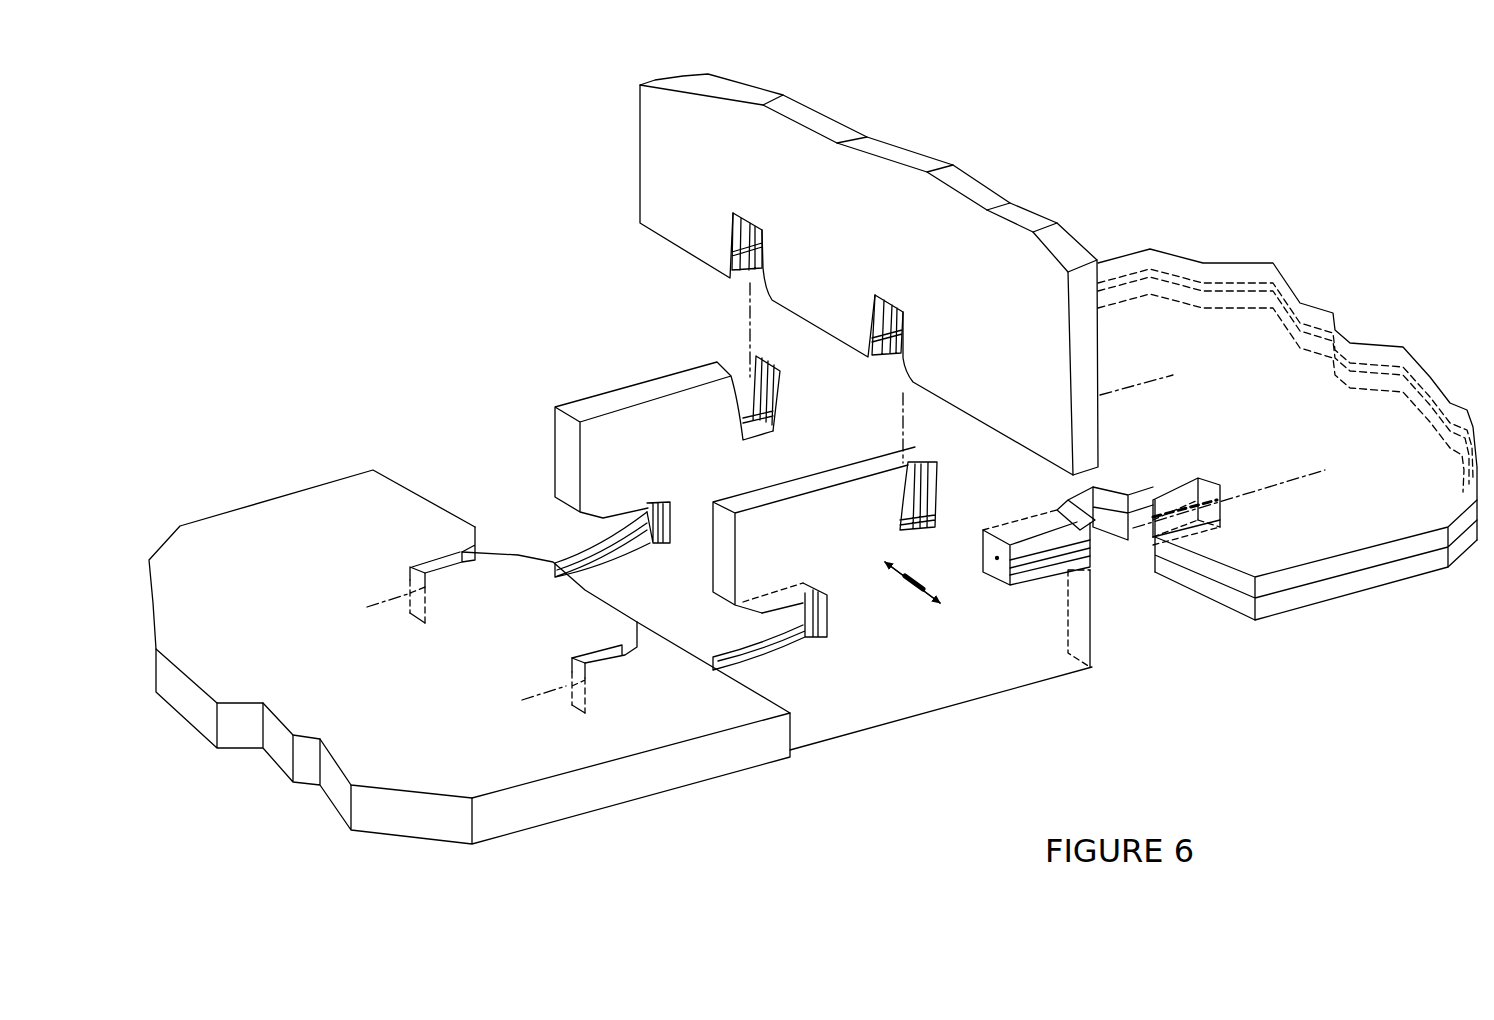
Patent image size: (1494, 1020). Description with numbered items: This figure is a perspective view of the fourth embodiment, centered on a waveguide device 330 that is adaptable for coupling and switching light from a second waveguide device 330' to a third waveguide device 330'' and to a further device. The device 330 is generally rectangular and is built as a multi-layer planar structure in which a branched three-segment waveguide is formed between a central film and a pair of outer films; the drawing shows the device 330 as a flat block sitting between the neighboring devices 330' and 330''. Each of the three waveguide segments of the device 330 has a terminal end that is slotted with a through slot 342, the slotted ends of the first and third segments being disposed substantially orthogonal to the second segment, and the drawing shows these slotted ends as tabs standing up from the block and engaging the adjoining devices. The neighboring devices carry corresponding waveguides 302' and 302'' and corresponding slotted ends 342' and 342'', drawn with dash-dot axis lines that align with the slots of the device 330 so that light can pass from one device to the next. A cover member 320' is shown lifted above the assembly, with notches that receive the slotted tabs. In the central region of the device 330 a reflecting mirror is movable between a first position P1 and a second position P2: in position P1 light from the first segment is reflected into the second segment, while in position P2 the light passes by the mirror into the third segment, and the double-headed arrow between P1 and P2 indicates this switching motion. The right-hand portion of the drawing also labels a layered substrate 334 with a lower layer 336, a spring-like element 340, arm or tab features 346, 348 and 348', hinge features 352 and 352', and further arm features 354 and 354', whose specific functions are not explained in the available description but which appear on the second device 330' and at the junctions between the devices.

The cover plate 320' is at (869, 274).
The second waveguide device 330' is at (1287, 341).
The waveguide device 330 is at (813, 538).
The third waveguide device 330'' is at (469, 629).
The axis 302' is at (1251, 440).
The axis 302'' is at (600, 508).
The substrate 334 is at (1312, 542).
The lower substrate layer 336 is at (1352, 594).
The spring member 340 is at (1212, 500).
The through slot 342 is at (908, 512).
The tab 342' is at (862, 586).
The tab 342'' is at (656, 463).
The lower arm 346 is at (775, 660).
The upper arm 348 is at (920, 539).
The upper arm 348' is at (1194, 481).
The hinge 352 is at (1044, 491).
The hinge 352' is at (1126, 479).
The middle arm 354 is at (952, 617).
The middle arm 354' is at (1224, 491).
The first position P1 is at (932, 592).
The second position P2 is at (888, 559).